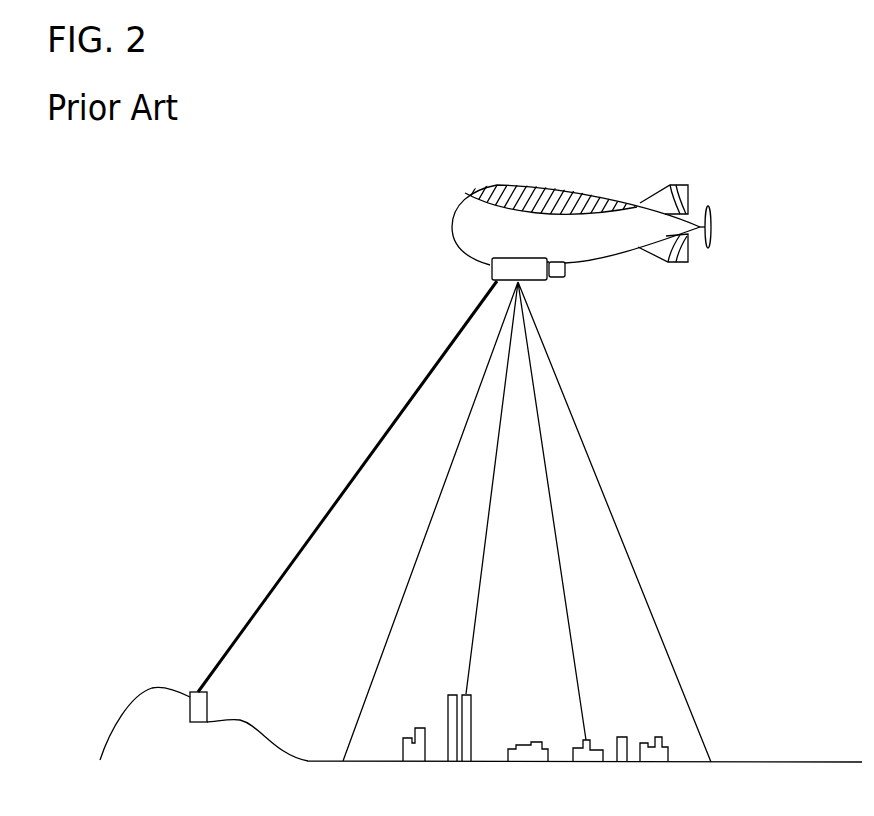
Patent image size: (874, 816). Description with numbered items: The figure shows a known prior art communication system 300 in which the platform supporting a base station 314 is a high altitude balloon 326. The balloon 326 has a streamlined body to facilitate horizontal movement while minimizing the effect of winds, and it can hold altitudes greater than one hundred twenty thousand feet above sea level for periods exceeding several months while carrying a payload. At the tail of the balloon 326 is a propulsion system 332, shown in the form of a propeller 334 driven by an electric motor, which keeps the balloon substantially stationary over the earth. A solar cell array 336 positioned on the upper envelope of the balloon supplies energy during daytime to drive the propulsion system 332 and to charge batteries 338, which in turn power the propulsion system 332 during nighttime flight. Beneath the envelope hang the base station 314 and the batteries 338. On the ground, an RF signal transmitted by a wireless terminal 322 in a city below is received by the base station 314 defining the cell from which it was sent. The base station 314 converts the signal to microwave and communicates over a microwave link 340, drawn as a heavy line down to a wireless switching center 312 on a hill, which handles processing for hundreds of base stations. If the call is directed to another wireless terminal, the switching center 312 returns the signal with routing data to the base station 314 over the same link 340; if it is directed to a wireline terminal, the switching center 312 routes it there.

The prior art surveillance system 300 is at (262, 181).
The wireless switching center 312 is at (208, 705).
The base station 314 is at (491, 269).
The wireless terminal 322 is at (385, 758).
The high altitude balloon 326 is at (451, 227).
The propulsion system 332 is at (719, 227).
The propeller 334 is at (712, 204).
The solar cell array 336 is at (543, 193).
The batteries 338 is at (570, 278).
The microwave link 340 is at (262, 601).